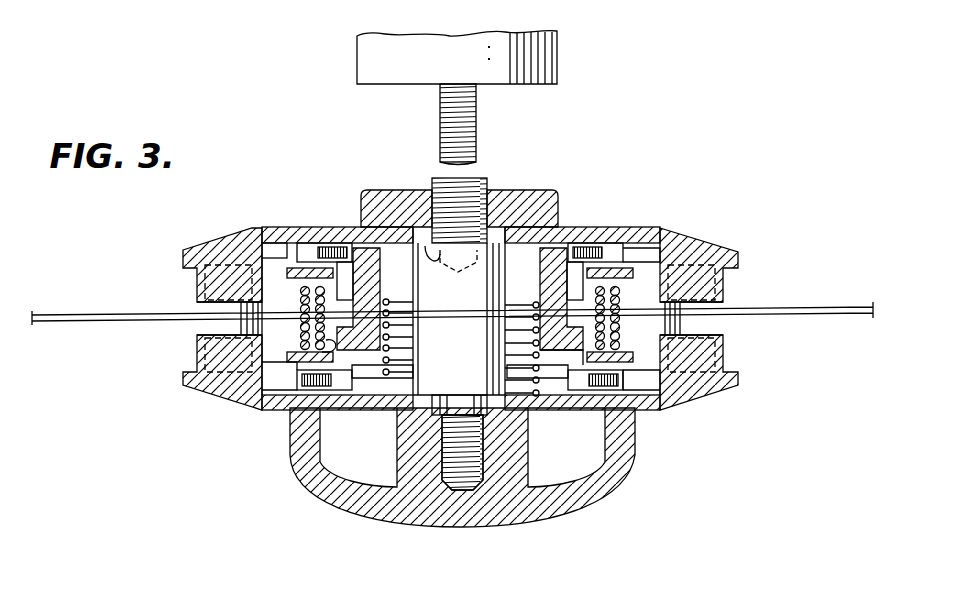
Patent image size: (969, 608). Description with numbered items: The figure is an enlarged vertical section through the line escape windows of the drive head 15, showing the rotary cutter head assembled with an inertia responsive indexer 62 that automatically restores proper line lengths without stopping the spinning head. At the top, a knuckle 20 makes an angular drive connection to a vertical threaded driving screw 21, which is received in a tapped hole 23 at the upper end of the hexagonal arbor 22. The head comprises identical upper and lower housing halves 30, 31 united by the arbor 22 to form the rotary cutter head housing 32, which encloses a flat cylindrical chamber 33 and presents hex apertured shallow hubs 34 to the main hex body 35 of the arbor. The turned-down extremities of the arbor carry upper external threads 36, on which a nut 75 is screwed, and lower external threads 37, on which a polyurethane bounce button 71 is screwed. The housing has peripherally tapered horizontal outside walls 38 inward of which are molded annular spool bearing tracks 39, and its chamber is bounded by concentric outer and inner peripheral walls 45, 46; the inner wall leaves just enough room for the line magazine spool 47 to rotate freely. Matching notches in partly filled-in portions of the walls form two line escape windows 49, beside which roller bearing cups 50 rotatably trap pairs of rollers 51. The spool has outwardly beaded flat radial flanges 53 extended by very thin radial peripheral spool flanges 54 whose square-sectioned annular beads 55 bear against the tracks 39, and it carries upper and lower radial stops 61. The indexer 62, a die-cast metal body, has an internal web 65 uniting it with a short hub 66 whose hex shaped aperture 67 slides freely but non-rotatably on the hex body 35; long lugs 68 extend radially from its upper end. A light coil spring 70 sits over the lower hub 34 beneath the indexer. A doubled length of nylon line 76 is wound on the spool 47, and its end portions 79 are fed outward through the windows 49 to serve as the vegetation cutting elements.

The drive head 15 is at (728, 182).
The knuckle 20 is at (357, 56).
The threaded driving screw 21 is at (476, 100).
The hexagonal arbor 22 is at (486, 374).
The tapped hole 23 is at (435, 250).
The upper housing half 30 is at (254, 229).
The lower housing half 31 is at (233, 402).
The rotary cutter head housing 32 is at (183, 378).
The flat cylindrical chamber 33 is at (275, 245).
The hex apertured shallow hub 34 is at (528, 224).
The main hex body 35 is at (422, 402).
The upper external threads 36 is at (485, 200).
The lower external threads 37 is at (446, 448).
The peripherally tapered horizontal outside wall 38 is at (590, 240).
The annular spool bearing track 39 is at (645, 248).
The outer peripheral wall 45 is at (208, 262).
The inner peripheral wall 46 is at (228, 350).
The line magazine spool 47 is at (665, 392).
The line escape window 49 is at (716, 302).
The roller bearing cup 50 is at (710, 372).
The roller 51 is at (210, 330).
The flat radial flange 53 is at (290, 398).
The thin radial peripheral spool flange 54 is at (660, 262).
The annular bead 55 is at (630, 400).
The radial stop 61 is at (312, 250).
The indexer 62 is at (372, 246).
The internal metal web 65 is at (402, 280).
The short hub 66 is at (406, 310).
The hex shaped aperture 67 is at (496, 302).
The long lug 68 is at (320, 246).
The light coil spring 70 is at (575, 376).
The bounce button 71 is at (513, 512).
The nut 75 is at (565, 226).
The nylon line 76 is at (300, 324).
The line end portion 79 is at (58, 315).